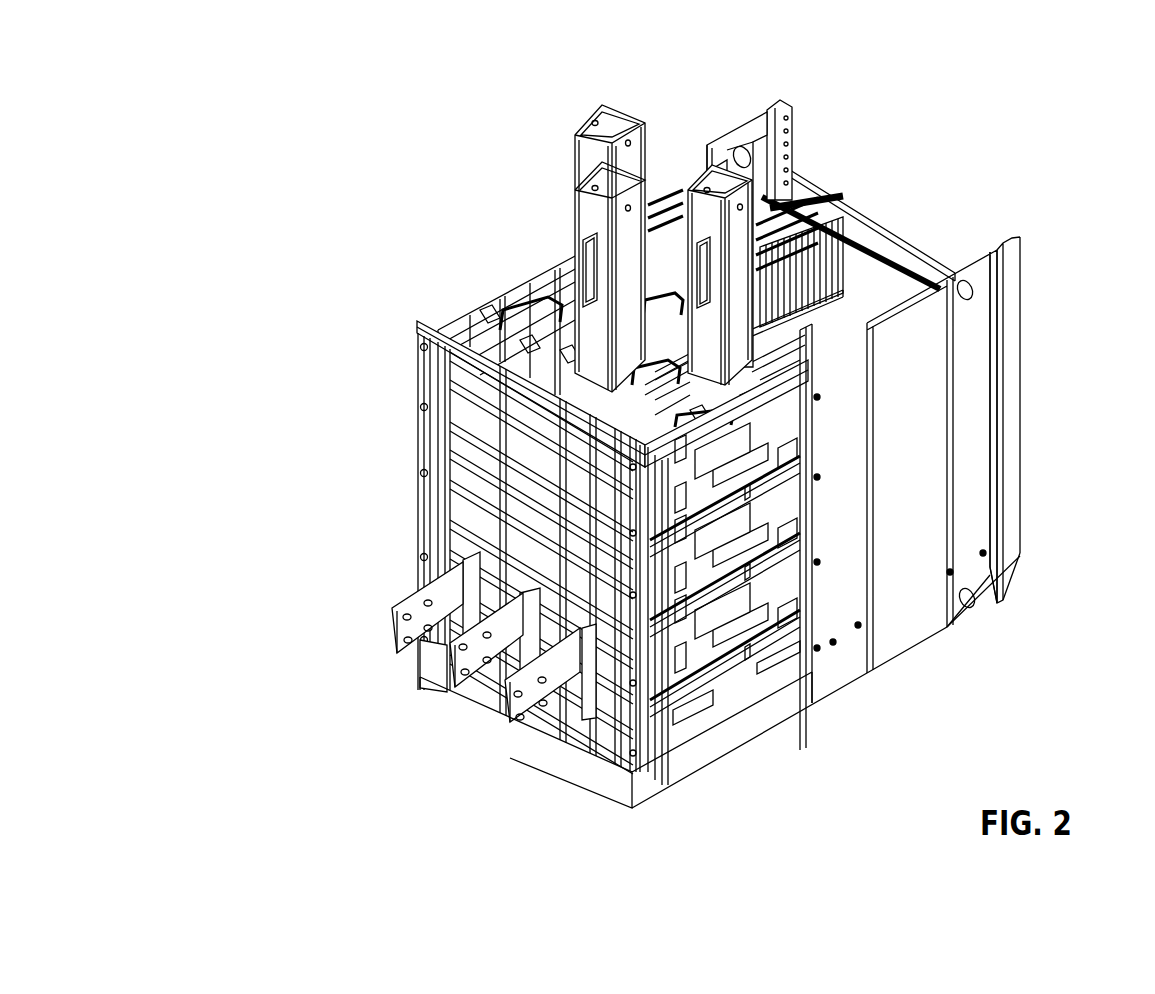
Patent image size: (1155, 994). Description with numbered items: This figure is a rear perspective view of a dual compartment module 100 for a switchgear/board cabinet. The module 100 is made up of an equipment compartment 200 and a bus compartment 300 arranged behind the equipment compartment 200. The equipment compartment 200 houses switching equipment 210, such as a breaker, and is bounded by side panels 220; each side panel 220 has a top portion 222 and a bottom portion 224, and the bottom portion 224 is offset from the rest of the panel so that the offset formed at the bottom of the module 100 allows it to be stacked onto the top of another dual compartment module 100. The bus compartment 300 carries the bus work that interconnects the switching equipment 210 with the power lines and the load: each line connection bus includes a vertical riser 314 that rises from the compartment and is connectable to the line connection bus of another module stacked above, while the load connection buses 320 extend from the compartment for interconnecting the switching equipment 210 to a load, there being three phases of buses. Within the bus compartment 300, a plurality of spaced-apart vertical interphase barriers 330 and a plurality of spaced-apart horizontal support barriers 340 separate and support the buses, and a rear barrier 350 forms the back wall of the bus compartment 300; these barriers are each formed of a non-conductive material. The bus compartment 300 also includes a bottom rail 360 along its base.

The dual compartment module 100 is at (236, 93).
The equipment compartment 200 is at (862, 112).
The switching equipment 210 is at (897, 227).
The side panel 220 is at (927, 508).
The top portion 222 is at (1010, 285).
The bottom portion 224 is at (927, 625).
The bus compartment 300 is at (355, 207).
The vertical riser 314 is at (595, 188).
The load connection buses 320 is at (385, 650).
The vertical interphase barriers 330 is at (538, 293).
The horizontal support barriers 340 is at (707, 687).
The rear barrier 350 is at (420, 423).
The bottom rail 360 is at (572, 752).